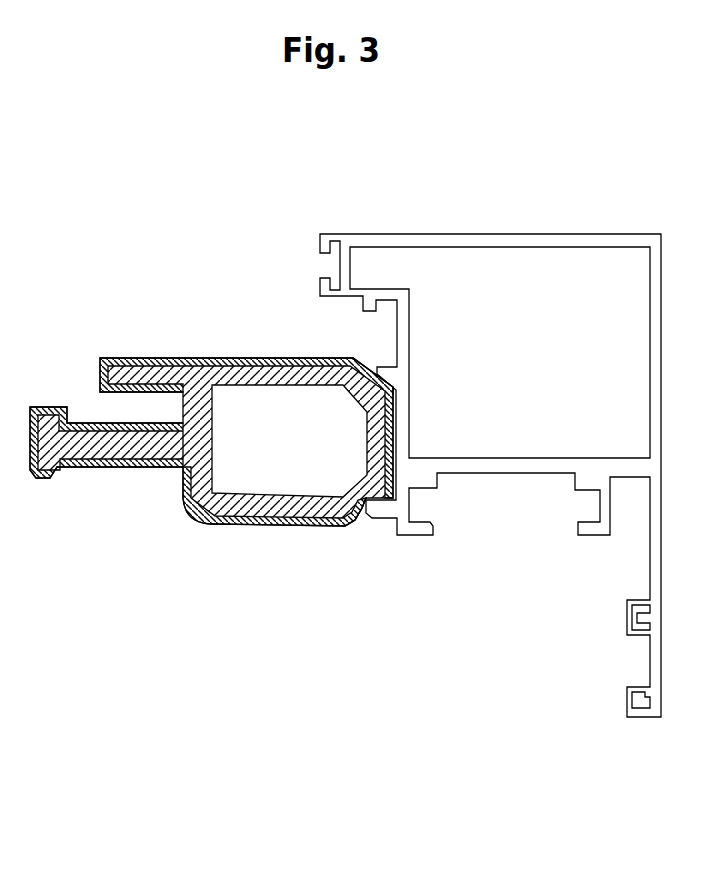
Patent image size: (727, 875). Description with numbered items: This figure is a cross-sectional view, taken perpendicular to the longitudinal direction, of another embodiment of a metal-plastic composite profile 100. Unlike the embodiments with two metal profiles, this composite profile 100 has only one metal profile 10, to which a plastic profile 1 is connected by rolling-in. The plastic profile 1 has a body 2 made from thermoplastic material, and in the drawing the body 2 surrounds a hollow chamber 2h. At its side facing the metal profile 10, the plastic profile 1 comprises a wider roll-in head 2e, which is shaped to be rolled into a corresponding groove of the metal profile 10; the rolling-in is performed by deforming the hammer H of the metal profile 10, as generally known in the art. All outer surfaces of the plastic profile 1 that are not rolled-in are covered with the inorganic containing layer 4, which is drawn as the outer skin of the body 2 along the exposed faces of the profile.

The metal-plastic composite profile 100 is at (387, 636).
The metal profile 10 is at (504, 484).
The plastic profile 1 is at (192, 535).
The body 2 is at (262, 512).
The hollow chamber 2h is at (297, 444).
The wider roll-in head 2e is at (408, 395).
The inorganic containing layer 4 is at (318, 512).
The hammer H is at (366, 512).